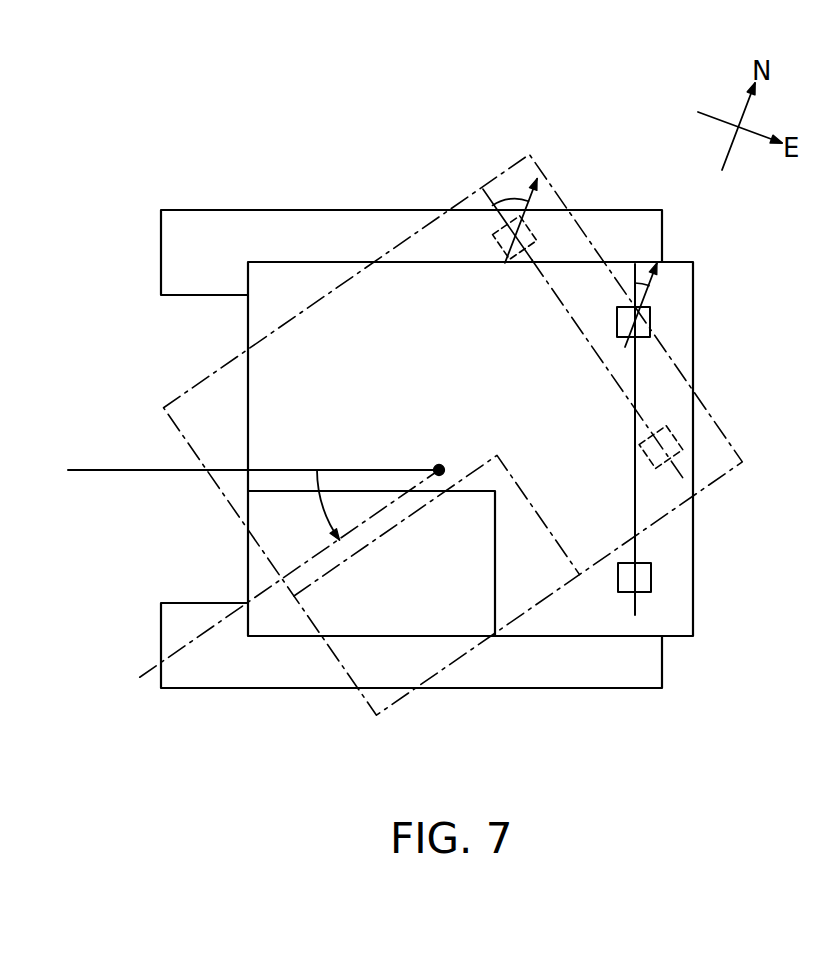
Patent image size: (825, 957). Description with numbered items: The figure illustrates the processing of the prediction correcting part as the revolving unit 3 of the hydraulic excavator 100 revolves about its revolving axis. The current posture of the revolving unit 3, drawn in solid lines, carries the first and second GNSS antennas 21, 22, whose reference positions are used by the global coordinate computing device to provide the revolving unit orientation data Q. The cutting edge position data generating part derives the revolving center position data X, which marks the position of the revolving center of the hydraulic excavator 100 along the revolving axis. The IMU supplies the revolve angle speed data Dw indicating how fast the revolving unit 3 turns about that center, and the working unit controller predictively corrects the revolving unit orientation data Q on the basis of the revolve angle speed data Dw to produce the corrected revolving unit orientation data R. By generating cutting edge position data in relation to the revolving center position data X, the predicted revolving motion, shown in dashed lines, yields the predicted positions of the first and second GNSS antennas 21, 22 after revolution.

The hydraulic excavator 100 is at (130, 220).
The revolving unit 3 is at (485, 183).
The first GNSS antenna 21 is at (652, 578).
The second GNSS antenna 22 is at (651, 327).
The revolving center position data X is at (439, 465).
The revolve angle speed data Dw is at (327, 522).
The revolving unit orientation data Q is at (648, 260).
The corrected revolving unit orientation data R is at (538, 170).